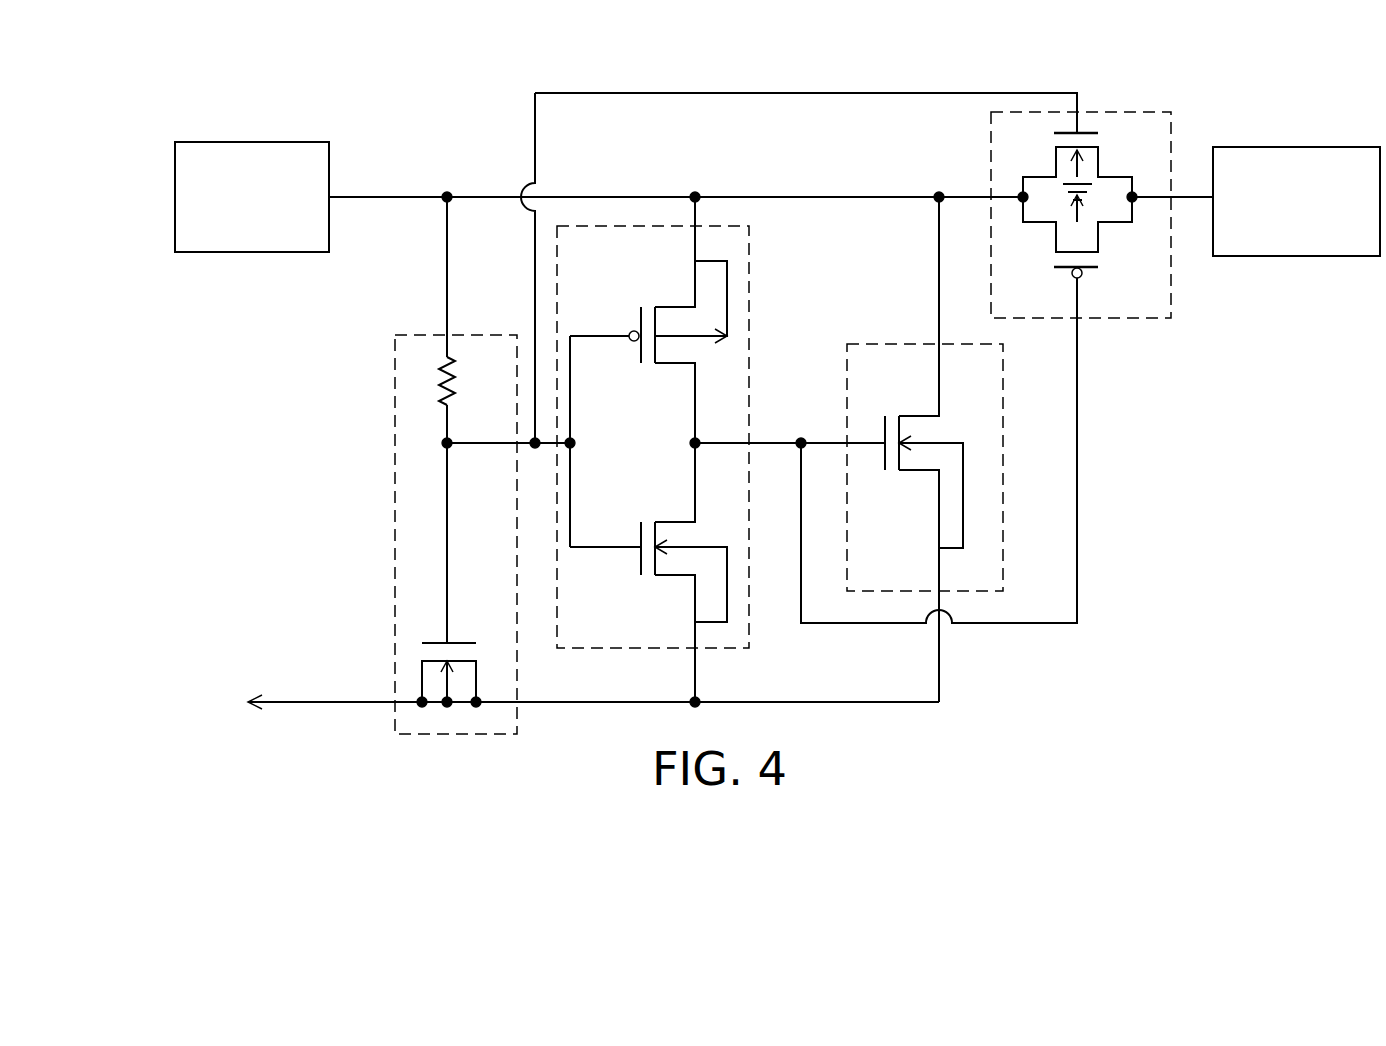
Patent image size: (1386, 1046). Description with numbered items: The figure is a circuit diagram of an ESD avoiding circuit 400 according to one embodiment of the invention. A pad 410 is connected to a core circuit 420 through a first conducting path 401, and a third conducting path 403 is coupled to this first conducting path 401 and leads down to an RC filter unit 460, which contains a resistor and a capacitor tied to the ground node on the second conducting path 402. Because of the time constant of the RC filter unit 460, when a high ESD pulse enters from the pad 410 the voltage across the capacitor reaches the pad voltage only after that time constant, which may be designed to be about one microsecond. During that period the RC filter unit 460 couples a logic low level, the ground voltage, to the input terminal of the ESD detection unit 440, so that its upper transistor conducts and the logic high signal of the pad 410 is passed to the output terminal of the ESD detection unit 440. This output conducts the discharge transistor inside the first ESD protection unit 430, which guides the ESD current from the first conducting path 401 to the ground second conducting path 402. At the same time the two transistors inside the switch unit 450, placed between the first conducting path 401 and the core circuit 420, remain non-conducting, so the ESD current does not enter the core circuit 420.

The ESD avoiding circuit 400 is at (1251, 707).
The pad 410 is at (225, 142).
The core circuit 420 is at (1298, 147).
The first conducting path 401 is at (413, 197).
The second conducting path 402 is at (314, 702).
The third conducting path 403 is at (447, 318).
The first ESD protection unit 430 is at (1003, 437).
The ESD detection unit 440 is at (749, 253).
The switch unit 450 is at (1172, 136).
The RC filter unit 460 is at (395, 465).